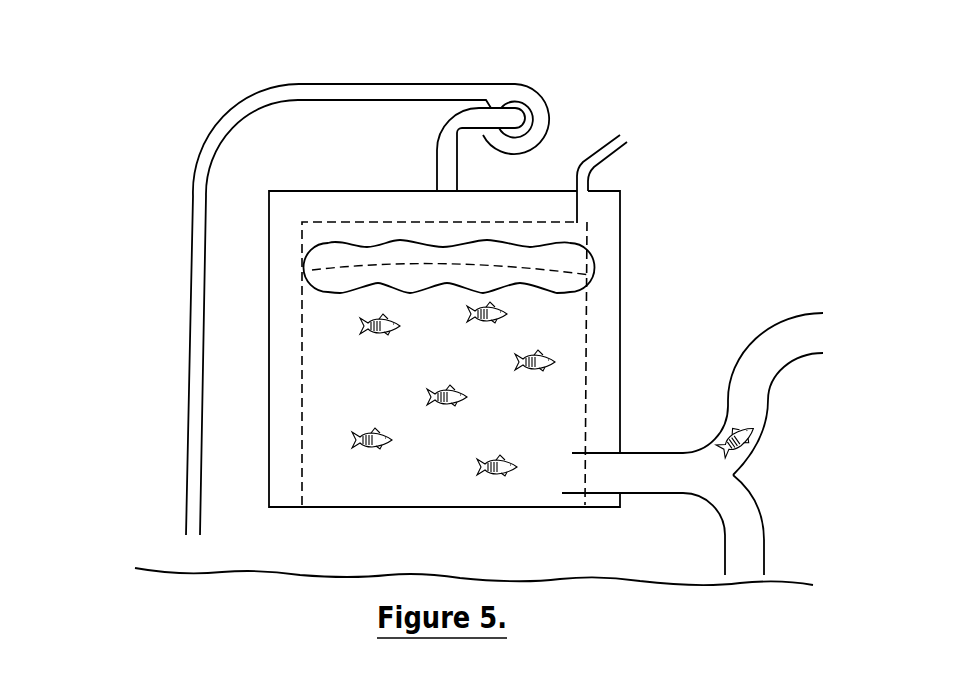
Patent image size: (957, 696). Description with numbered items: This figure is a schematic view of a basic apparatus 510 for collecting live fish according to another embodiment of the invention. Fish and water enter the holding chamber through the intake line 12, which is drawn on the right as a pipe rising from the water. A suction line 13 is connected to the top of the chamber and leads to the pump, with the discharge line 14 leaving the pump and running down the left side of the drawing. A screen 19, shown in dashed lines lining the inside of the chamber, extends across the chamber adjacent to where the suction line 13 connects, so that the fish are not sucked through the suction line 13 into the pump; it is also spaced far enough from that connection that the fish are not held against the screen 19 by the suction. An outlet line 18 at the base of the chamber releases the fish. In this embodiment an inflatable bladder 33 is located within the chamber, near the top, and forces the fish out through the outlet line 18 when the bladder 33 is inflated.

The apparatus for collecting fish 510 is at (682, 142).
The discharge line 14 is at (257, 98).
The suction line 13 is at (447, 143).
The screen 19 is at (320, 218).
The inflatable bladder 33 is at (570, 262).
The outlet line 18 is at (778, 345).
The intake line 12 is at (752, 533).